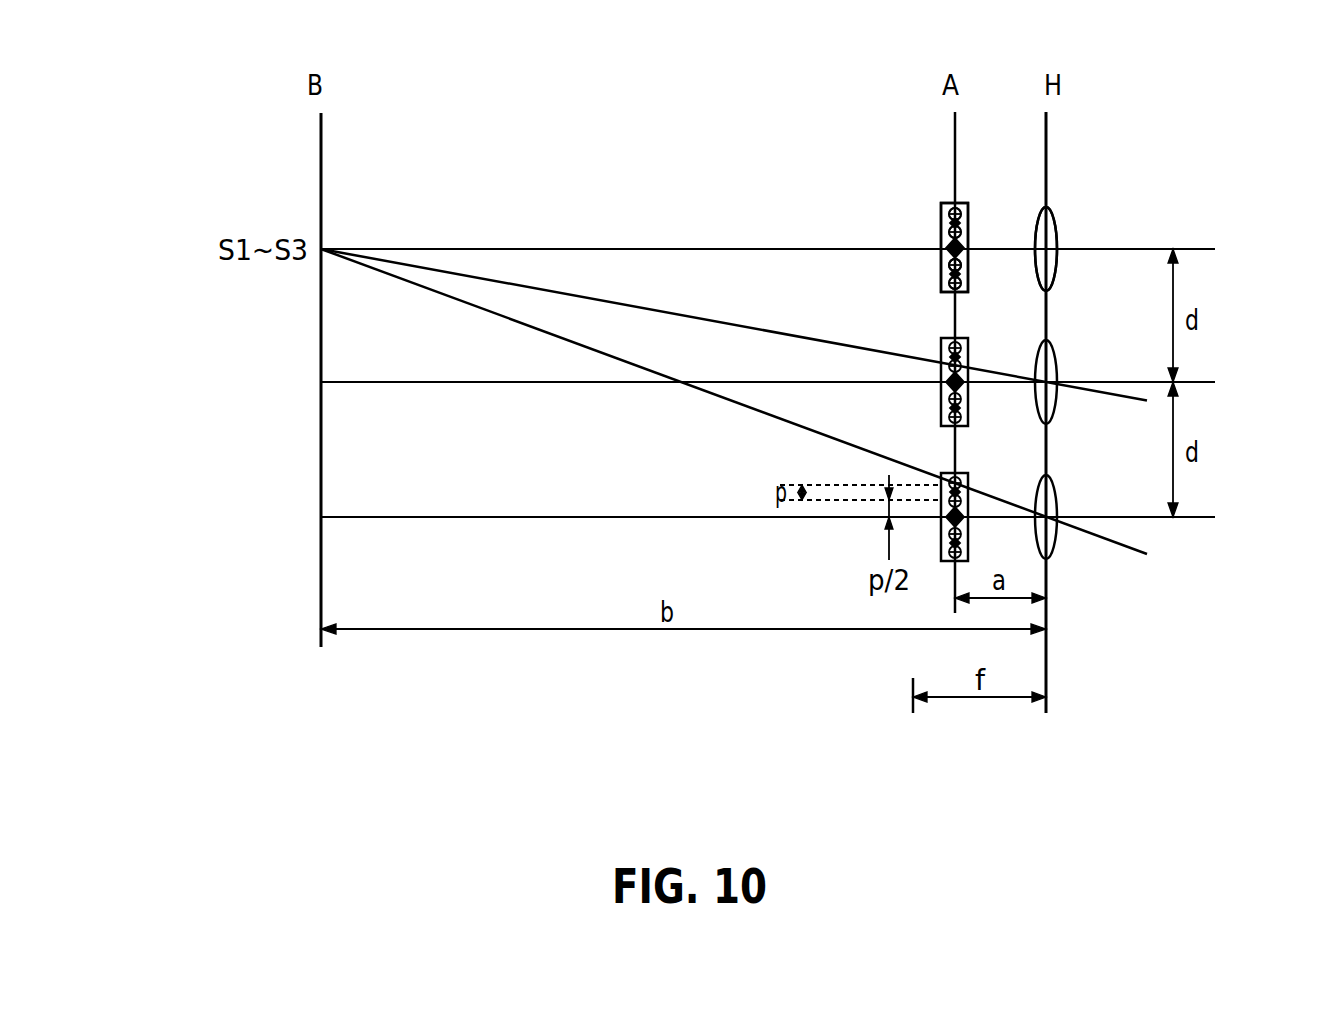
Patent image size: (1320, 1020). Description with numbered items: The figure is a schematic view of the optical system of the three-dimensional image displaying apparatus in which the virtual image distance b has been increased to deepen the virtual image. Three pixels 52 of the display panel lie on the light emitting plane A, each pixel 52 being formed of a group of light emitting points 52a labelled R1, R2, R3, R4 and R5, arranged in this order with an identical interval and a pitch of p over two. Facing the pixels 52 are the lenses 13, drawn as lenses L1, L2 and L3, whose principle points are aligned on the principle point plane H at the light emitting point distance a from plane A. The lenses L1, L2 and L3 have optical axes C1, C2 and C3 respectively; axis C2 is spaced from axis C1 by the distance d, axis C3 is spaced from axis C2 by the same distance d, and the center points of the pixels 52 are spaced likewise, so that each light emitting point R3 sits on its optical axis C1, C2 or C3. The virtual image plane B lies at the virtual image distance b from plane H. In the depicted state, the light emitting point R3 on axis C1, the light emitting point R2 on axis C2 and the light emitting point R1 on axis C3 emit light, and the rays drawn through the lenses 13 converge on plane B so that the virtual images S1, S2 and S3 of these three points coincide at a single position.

The pixel 52 is at (943, 204).
The light emitting point 52a is at (967, 205).
The lens 13 is at (1058, 268).
The light emitting point R1 is at (943, 211).
The light emitting point R2 is at (943, 231).
The light emitting point R3 is at (943, 264).
The light emitting point R4 is at (968, 262).
The light emitting point R5 is at (949, 292).
The lens L1 is at (1068, 244).
The lens L2 is at (1068, 377).
The lens L3 is at (1068, 512).
The optical axis C1 is at (789, 252).
The optical axis C2 is at (789, 385).
The optical axis C3 is at (789, 520).